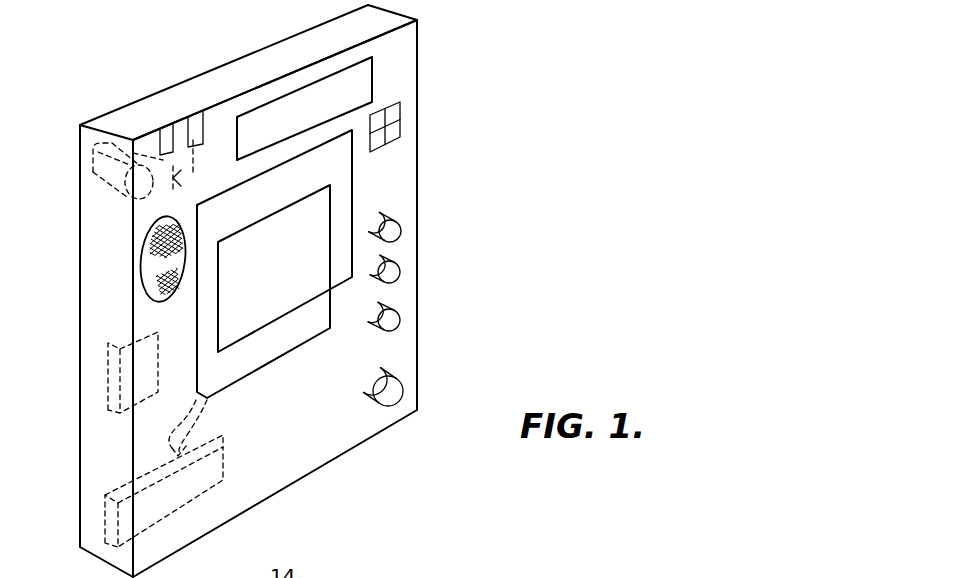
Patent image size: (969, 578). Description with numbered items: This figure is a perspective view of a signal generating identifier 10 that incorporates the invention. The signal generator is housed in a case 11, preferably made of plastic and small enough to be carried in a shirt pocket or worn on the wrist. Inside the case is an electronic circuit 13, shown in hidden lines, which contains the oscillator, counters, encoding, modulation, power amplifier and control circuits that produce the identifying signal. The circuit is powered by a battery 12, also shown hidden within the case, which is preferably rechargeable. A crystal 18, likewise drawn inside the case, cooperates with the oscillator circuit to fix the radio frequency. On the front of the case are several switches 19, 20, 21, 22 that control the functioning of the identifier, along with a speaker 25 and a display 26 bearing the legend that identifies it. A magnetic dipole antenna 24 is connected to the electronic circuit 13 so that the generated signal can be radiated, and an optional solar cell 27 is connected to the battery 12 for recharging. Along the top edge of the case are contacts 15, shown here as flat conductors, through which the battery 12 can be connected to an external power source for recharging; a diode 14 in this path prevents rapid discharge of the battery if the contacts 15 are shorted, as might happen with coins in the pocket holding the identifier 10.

The signal generating identifier 10 is at (221, 60).
The case 11 is at (271, 44).
The battery 12 is at (105, 178).
The electronic circuit 13 is at (238, 458).
The diode 14 is at (185, 181).
The contacts 15 is at (196, 122).
The crystal 18 is at (108, 387).
The switch 19 is at (393, 230).
The switch 20 is at (394, 270).
The switch 21 is at (394, 320).
The switch 22 is at (395, 388).
The magnetic dipole antenna 24 is at (355, 193).
The speaker 25 is at (147, 256).
The display 26 is at (363, 82).
The solar cell 27 is at (386, 116).